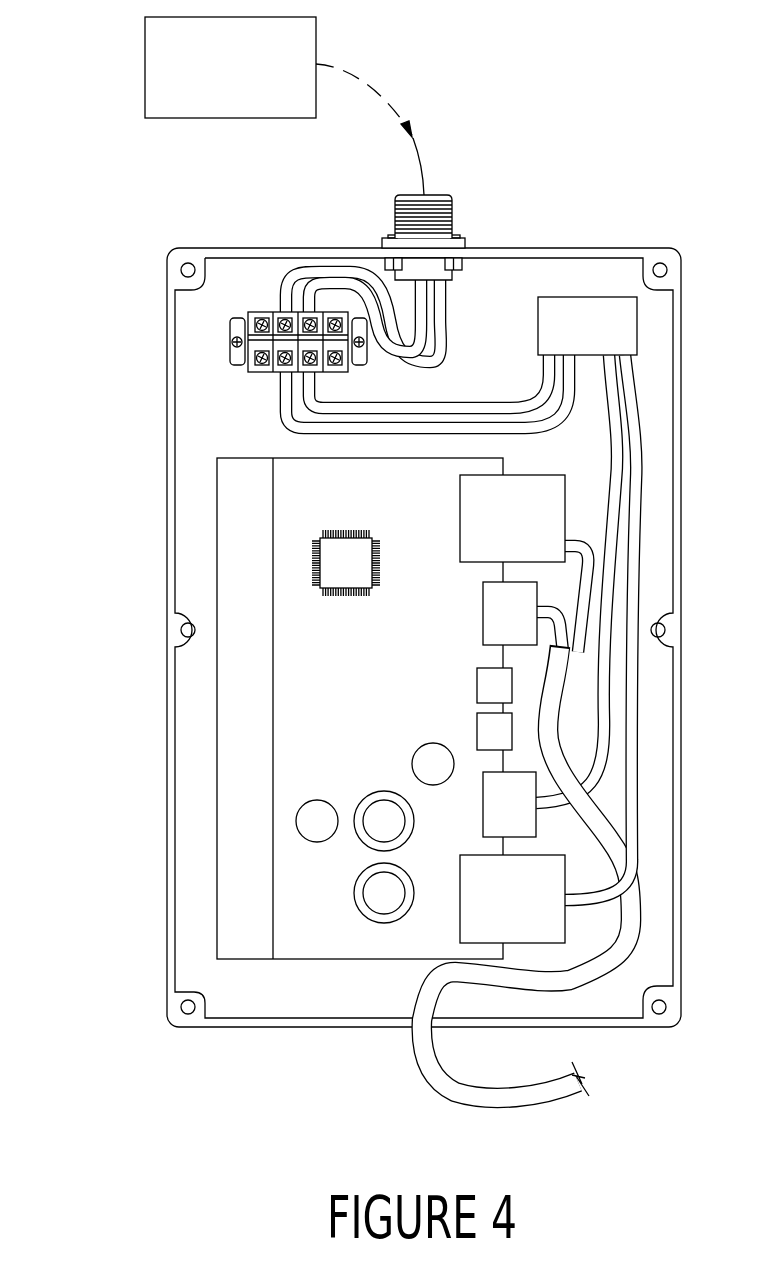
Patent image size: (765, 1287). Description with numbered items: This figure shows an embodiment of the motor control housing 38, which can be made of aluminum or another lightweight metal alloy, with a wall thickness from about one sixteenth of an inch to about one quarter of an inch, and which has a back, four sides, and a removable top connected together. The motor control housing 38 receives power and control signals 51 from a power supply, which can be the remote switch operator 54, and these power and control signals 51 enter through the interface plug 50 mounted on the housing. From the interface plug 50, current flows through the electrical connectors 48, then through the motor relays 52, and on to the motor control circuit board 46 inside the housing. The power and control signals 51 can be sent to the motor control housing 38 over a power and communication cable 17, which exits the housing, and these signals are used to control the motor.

The power and communication cable 17 is at (428, 1002).
The motor control housing 38 is at (170, 824).
The motor control circuit board 46 is at (300, 482).
The electrical connectors 48 is at (272, 310).
The interface plug 50 is at (452, 222).
The power and control signals 51 is at (390, 103).
The motor relays 52 is at (585, 297).
The remote switch operator 54 is at (145, 70).